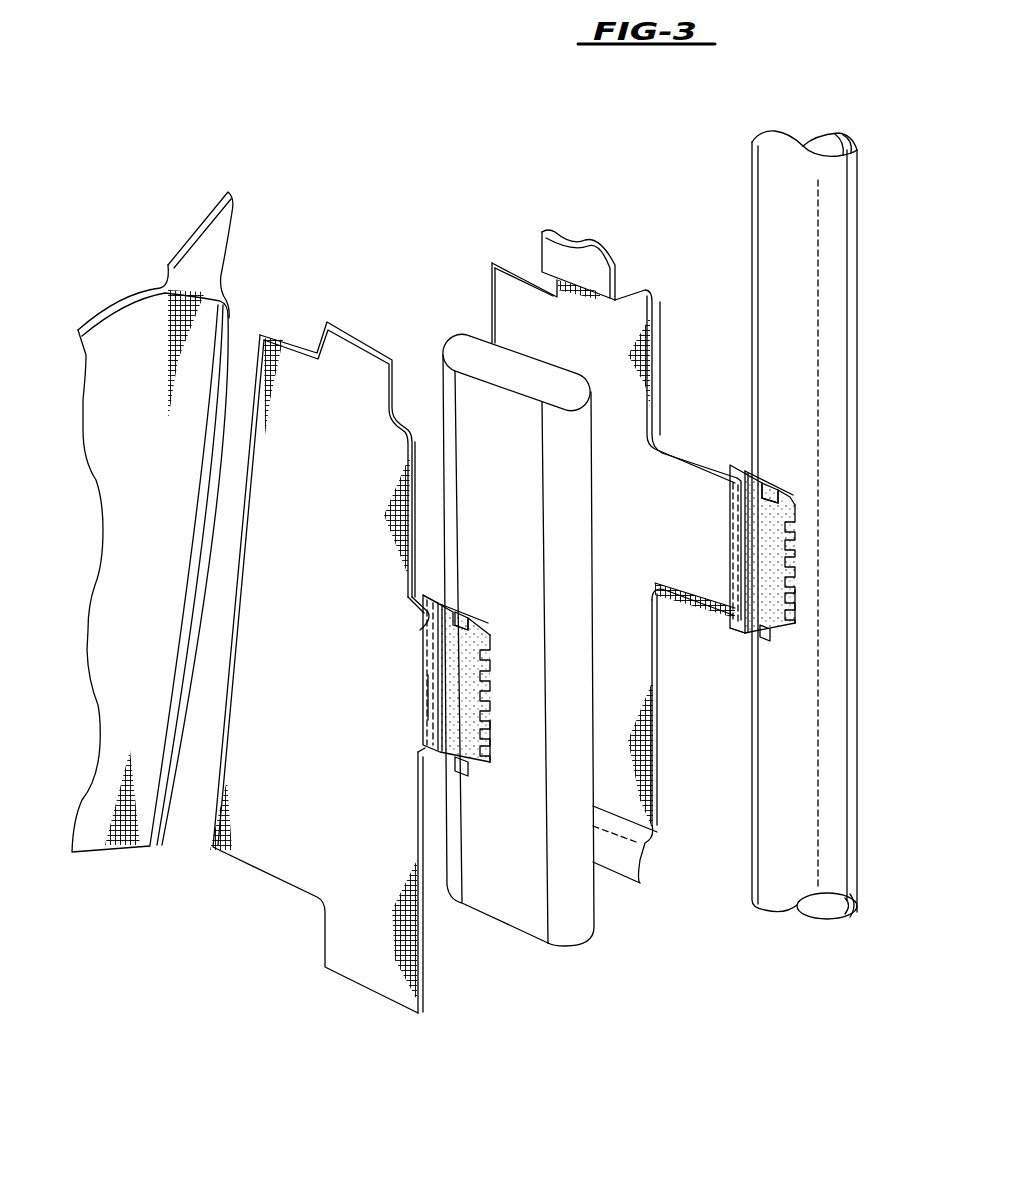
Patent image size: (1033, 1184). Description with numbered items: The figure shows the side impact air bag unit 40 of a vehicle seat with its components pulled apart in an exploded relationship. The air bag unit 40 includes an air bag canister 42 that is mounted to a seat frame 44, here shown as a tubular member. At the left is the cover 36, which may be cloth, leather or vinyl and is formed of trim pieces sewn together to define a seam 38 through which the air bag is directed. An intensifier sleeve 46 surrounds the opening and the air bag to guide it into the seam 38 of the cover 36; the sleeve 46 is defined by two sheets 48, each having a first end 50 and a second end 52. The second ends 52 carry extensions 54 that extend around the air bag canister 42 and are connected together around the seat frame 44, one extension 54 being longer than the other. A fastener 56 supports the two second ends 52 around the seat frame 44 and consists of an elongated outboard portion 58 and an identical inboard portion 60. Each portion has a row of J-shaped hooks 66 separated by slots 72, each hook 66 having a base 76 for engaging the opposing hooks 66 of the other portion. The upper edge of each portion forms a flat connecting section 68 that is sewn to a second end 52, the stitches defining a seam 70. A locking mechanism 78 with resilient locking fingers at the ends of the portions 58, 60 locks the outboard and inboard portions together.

The cover 36 is at (130, 338).
The seam 38 is at (220, 282).
The air bag unit 40 is at (153, 176).
The air bag canister 42 is at (456, 345).
The seat frame 44 is at (765, 205).
The intensifier sleeve 46 is at (323, 995).
The sheet 48 is at (527, 300).
The first end 50 is at (490, 303).
The second end 52 is at (653, 380).
The extension 54 is at (420, 630).
The fastener 56 is at (434, 780).
The outboard portion 58 is at (460, 647).
The inboard portion 60 is at (785, 512).
The J-shaped hook 66 is at (490, 712).
The flat connecting section 68 is at (440, 603).
The seam 70 is at (428, 680).
The slot 72 is at (493, 727).
The base 76 is at (792, 505).
The locking mechanism 78 is at (465, 598).